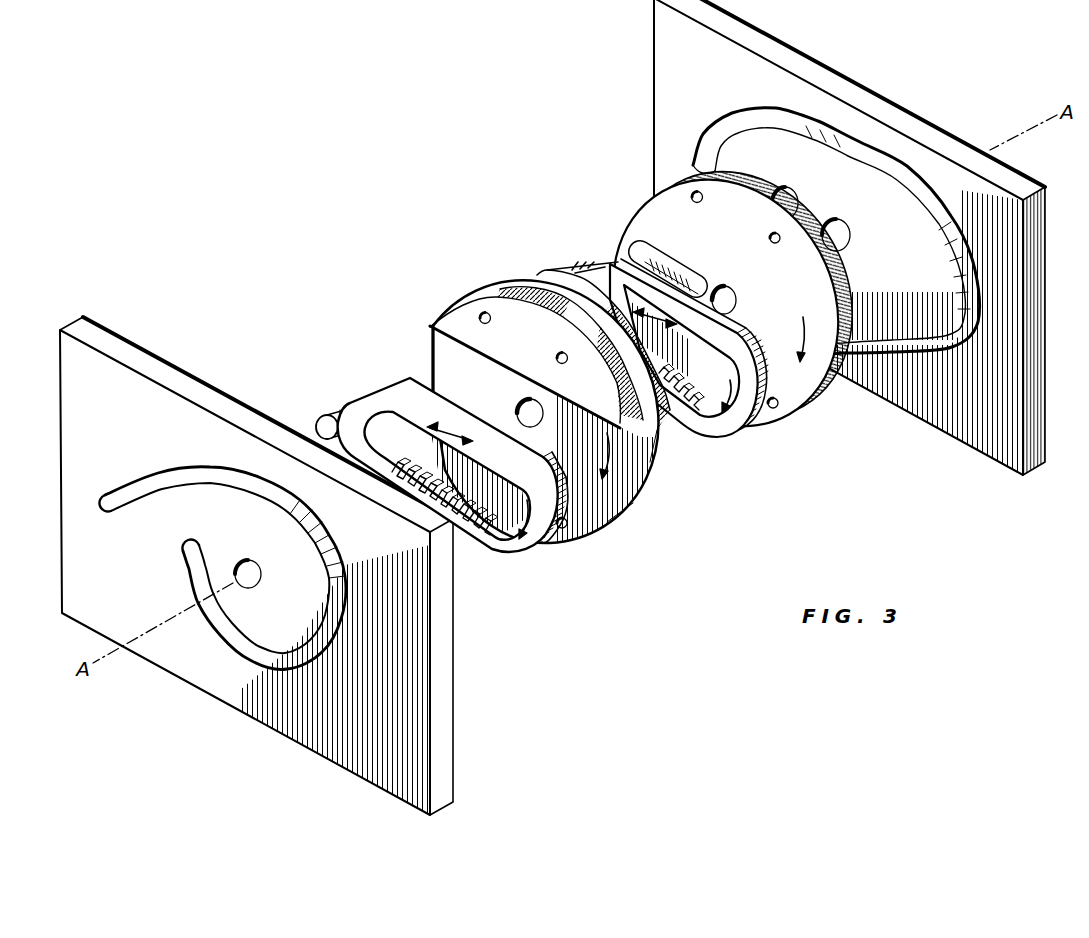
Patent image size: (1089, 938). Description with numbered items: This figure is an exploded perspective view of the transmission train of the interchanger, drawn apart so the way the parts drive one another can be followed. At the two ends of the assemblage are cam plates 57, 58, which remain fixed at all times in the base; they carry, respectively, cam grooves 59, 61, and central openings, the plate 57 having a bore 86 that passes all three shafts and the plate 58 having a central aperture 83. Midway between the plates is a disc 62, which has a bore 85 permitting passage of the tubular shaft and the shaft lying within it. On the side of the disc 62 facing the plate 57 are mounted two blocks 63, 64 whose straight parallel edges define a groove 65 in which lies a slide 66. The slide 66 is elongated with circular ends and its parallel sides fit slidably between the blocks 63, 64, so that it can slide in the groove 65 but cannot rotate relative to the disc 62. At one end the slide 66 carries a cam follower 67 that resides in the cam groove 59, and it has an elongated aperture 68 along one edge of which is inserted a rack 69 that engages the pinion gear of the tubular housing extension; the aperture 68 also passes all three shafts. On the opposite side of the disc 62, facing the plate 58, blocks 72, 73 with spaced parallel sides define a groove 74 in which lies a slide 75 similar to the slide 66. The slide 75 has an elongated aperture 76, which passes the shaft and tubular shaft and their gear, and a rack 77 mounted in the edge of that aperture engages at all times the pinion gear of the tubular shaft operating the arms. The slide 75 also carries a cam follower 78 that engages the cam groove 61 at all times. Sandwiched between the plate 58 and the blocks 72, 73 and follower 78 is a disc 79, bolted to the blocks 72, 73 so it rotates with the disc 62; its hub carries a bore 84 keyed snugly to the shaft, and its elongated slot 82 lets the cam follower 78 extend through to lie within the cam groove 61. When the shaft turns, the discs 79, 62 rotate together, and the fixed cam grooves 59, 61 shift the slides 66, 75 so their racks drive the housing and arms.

The cam plate 57 is at (193, 373).
The cam plate 58 is at (805, 63).
The cam groove 59 is at (173, 467).
The cam groove 61 is at (740, 116).
The disc 62 is at (530, 292).
The block 63 is at (457, 315).
The block 64 is at (575, 538).
The groove 65 is at (463, 398).
The slide 66 is at (375, 383).
The cam follower 67 is at (318, 413).
The elongated aperture 68 is at (373, 433).
The rack 69 is at (474, 527).
The block 72 is at (545, 273).
The block 73 is at (617, 497).
The groove 74 is at (647, 490).
The slide 75 is at (727, 433).
The elongated aperture 76 is at (715, 368).
The rack 77 is at (667, 414).
The cam follower 78 is at (588, 263).
The disc 79 is at (643, 215).
The elongated slot 82 is at (680, 267).
The central aperture 83 is at (836, 222).
The bore 84 is at (738, 299).
The bore 85 is at (534, 421).
The bore 86 is at (263, 586).